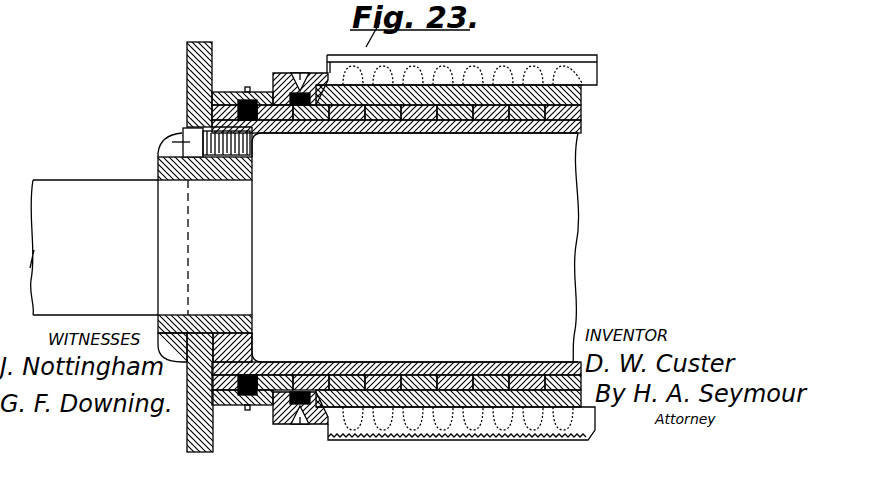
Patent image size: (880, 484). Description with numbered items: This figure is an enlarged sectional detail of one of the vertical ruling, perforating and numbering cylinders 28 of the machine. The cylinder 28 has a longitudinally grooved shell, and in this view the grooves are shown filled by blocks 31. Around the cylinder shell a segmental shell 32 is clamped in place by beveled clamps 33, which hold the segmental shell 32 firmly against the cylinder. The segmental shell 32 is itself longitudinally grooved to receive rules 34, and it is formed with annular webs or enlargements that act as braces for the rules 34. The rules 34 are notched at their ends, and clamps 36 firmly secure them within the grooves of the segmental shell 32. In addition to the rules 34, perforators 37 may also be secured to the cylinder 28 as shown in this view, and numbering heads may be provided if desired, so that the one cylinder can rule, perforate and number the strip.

The vertical ruling, perforating and numbering cylinder 28 is at (396, 247).
The blocks 31 is at (502, 112).
The segmental shell 32 is at (586, 92).
The beveled clamps 33 is at (227, 93).
The rules 34 is at (556, 45).
The clamps 36 is at (282, 75).
The perforators 37 is at (515, 428).